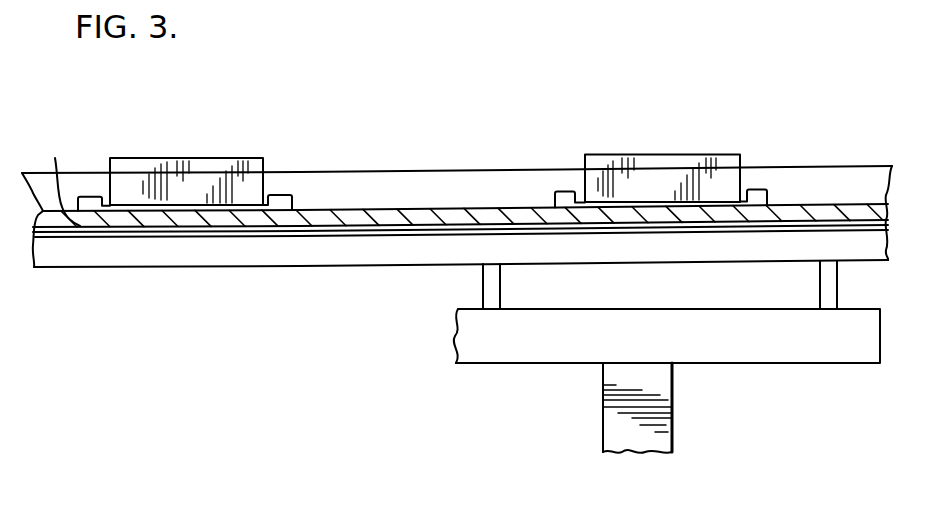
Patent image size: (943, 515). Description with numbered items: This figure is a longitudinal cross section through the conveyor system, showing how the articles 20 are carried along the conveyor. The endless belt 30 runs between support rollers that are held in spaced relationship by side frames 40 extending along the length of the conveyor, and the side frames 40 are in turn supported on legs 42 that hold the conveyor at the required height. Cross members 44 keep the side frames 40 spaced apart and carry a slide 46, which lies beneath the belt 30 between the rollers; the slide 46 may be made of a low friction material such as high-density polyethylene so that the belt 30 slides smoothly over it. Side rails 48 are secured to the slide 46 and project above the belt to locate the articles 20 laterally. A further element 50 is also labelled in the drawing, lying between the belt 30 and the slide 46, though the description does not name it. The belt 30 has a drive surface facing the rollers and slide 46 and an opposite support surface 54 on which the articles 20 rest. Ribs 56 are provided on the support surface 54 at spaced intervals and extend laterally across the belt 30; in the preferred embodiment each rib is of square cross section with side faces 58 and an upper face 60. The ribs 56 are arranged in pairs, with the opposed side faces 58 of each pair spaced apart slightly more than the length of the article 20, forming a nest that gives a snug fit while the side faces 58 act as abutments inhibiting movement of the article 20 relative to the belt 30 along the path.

The article 20 is at (160, 157).
The endless belt 30 is at (468, 207).
The side frames 40 is at (503, 346).
The legs 42 is at (605, 419).
The cross members 44 is at (483, 282).
The slide 46 is at (174, 252).
The side rails 48 is at (402, 183).
The interface layer 50 is at (557, 226).
The support surface 54 is at (551, 204).
The ribs 56 is at (282, 198).
The side faces 58 is at (101, 196).
The upper face 60 is at (54, 177).